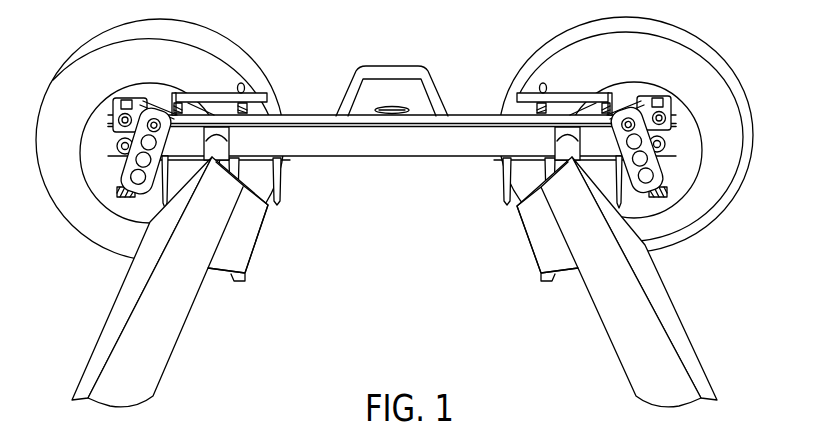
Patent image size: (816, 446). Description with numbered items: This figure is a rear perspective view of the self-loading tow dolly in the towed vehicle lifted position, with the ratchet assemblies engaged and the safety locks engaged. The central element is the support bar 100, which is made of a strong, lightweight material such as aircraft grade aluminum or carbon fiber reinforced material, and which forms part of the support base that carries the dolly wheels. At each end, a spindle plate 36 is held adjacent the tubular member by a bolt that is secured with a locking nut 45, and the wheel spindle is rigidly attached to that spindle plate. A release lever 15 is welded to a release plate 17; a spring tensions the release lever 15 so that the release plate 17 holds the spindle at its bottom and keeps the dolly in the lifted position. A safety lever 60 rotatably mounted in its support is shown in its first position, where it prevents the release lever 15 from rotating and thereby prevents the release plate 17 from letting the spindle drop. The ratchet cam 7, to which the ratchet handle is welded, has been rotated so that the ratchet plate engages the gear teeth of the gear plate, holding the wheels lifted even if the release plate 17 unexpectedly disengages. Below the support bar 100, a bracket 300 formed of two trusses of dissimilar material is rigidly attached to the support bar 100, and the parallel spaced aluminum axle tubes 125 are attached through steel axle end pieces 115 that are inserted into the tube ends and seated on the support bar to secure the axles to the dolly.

The ratchet cam 7 is at (118, 146).
The release lever 15 is at (269, 98).
The release plate 17 is at (120, 100).
The spindle plate 36 is at (128, 164).
The locking nut 45 is at (252, 242).
The safety lever 60 is at (238, 87).
The support bar 100 is at (383, 148).
The axle end piece 115 is at (224, 147).
The parallel spaced aluminum axle tube 125 is at (192, 298).
The bracket 300 is at (290, 198).